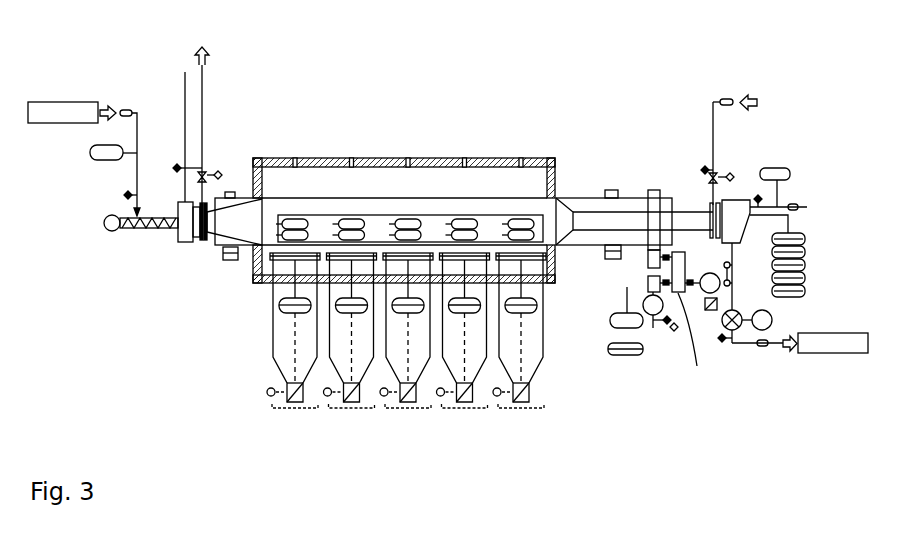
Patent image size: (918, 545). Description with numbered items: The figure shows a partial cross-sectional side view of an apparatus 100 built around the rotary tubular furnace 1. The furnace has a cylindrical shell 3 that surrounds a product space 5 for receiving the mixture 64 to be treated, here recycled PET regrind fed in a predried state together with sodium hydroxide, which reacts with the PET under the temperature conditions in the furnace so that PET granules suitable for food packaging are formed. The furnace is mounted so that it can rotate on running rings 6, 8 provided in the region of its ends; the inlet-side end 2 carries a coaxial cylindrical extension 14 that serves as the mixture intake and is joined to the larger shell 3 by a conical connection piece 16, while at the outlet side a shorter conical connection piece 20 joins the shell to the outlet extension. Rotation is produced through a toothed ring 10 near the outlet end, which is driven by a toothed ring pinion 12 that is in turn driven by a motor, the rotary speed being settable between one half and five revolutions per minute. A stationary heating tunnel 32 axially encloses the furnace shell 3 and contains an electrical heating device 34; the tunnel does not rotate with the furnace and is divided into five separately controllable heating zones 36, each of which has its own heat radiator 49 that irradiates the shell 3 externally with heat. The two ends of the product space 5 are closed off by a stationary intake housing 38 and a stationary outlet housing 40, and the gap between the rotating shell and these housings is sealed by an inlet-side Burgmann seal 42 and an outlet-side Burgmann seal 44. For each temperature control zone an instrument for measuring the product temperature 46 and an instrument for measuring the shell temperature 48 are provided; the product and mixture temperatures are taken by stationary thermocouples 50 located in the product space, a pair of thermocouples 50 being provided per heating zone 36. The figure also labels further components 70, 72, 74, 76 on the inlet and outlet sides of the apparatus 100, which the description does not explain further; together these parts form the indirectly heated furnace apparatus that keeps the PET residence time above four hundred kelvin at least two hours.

The rotary tubular furnace 1 is at (375, 186).
The inlet-side end 2 is at (213, 205).
The cylindrical shell 3 is at (277, 197).
The product space 5 is at (315, 205).
The running ring 6 is at (232, 261).
The running ring 8 is at (610, 190).
The toothed ring 10 is at (652, 190).
The toothed ring pinion 12 is at (650, 260).
The coaxial cylindrical extension 14 is at (196, 240).
The conical connection piece 16 is at (204, 241).
The conical connection piece 20 is at (567, 197).
The heating tunnel 32 is at (430, 160).
The electrical heating device 34 is at (541, 391).
The heating zones 36 is at (352, 413).
The intake housing 38 is at (183, 240).
The outlet housing 40 is at (734, 200).
The inlet-side Burgmann seal 42 is at (205, 200).
The outlet-side Burgmann seal 44 is at (710, 205).
The instrument for measuring the product temperature 46 is at (818, 233).
The instrument for measuring the shell temperature 48 is at (280, 307).
The heat radiator 49 is at (266, 278).
The thermocouples 50 is at (355, 218).
The mixture 64 is at (62, 102).
The seal 70 is at (717, 203).
The inlet seal line 72 is at (200, 203).
The screw conveyor 74 is at (147, 216).
The conveyor motor 76 is at (134, 230).
The apparatus 100 is at (238, 392).